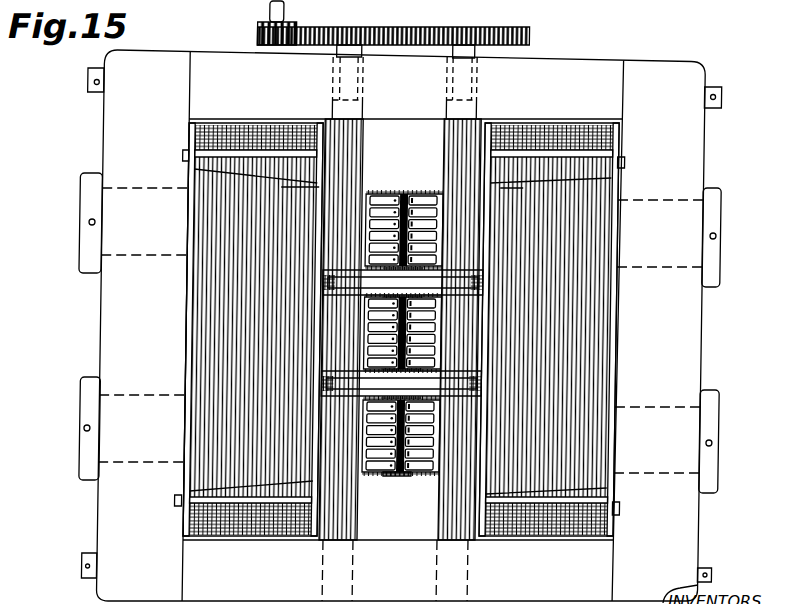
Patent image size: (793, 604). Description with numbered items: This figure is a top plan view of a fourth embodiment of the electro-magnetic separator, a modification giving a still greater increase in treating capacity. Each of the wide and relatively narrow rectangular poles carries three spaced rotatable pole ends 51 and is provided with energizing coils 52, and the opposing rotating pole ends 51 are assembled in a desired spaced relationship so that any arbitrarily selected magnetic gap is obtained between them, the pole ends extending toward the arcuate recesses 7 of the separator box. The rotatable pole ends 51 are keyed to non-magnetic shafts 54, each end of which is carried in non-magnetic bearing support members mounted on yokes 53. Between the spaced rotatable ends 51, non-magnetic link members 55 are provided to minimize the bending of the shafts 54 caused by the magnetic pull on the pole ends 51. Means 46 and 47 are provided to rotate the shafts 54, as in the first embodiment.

The arcuate recess 7 is at (405, 472).
The rotating means 46 is at (258, 32).
The rotating means 47 is at (359, 14).
The rotatable pole end 51 is at (359, 205).
The energizing coil 52 is at (248, 528).
The yoke 53 is at (575, 47).
The non-magnetic shaft 54 is at (368, 168).
The non-magnetic link member 55 is at (345, 277).